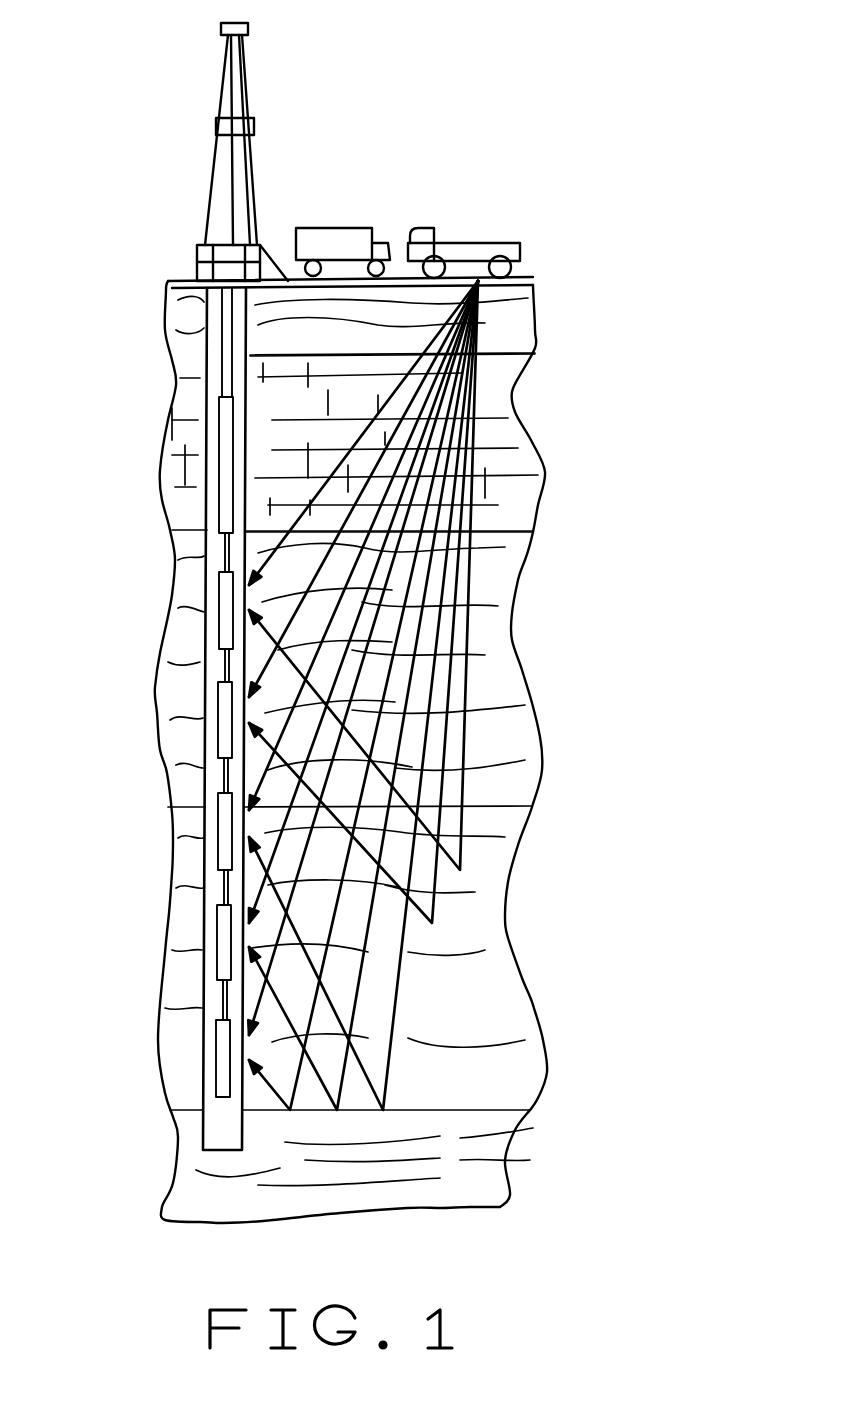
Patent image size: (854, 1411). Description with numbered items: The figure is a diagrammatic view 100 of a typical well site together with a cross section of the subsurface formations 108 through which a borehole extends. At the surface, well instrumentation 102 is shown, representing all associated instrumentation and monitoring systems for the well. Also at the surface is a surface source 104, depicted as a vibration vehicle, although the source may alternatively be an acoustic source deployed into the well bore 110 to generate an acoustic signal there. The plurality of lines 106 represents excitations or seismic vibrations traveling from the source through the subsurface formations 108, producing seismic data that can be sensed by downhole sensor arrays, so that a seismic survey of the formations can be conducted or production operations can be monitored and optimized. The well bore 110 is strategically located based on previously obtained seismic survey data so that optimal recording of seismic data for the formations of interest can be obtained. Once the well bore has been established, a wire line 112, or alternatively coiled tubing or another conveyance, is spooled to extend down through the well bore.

The diagrammatic view 100 is at (448, 127).
The well instrumentation 102 is at (187, 243).
The surface source 104 is at (500, 227).
The plurality of lines 106 is at (470, 463).
The subsurface formations 108 is at (461, 912).
The well bore 110 is at (213, 553).
The wire line 112 is at (225, 655).